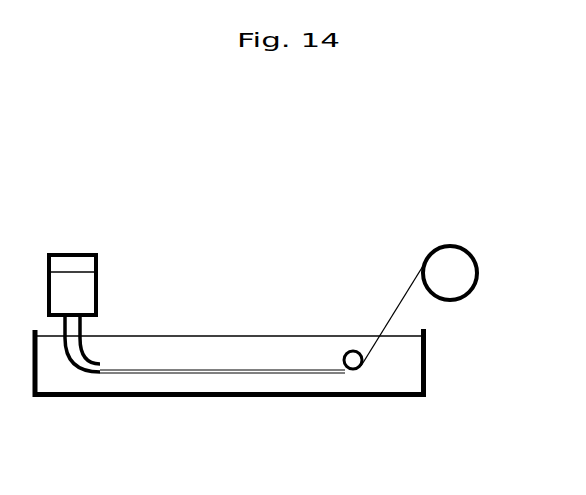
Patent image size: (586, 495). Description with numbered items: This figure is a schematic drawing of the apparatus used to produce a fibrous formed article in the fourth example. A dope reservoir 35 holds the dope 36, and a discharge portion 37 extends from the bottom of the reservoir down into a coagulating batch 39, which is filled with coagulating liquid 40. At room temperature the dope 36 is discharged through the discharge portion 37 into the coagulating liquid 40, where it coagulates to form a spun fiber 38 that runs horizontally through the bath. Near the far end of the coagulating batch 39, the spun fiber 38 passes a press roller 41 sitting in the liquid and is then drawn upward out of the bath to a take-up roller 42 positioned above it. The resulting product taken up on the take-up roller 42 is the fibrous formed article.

The dope reservoir 35 is at (86, 252).
The dope 36 is at (79, 289).
The discharge portion 37 is at (104, 367).
The spun fiber 38 is at (192, 372).
The coagulating batch 39 is at (244, 395).
The coagulating liquid 40 is at (264, 344).
The press roller 41 is at (362, 366).
The take-up roller 42 is at (480, 288).